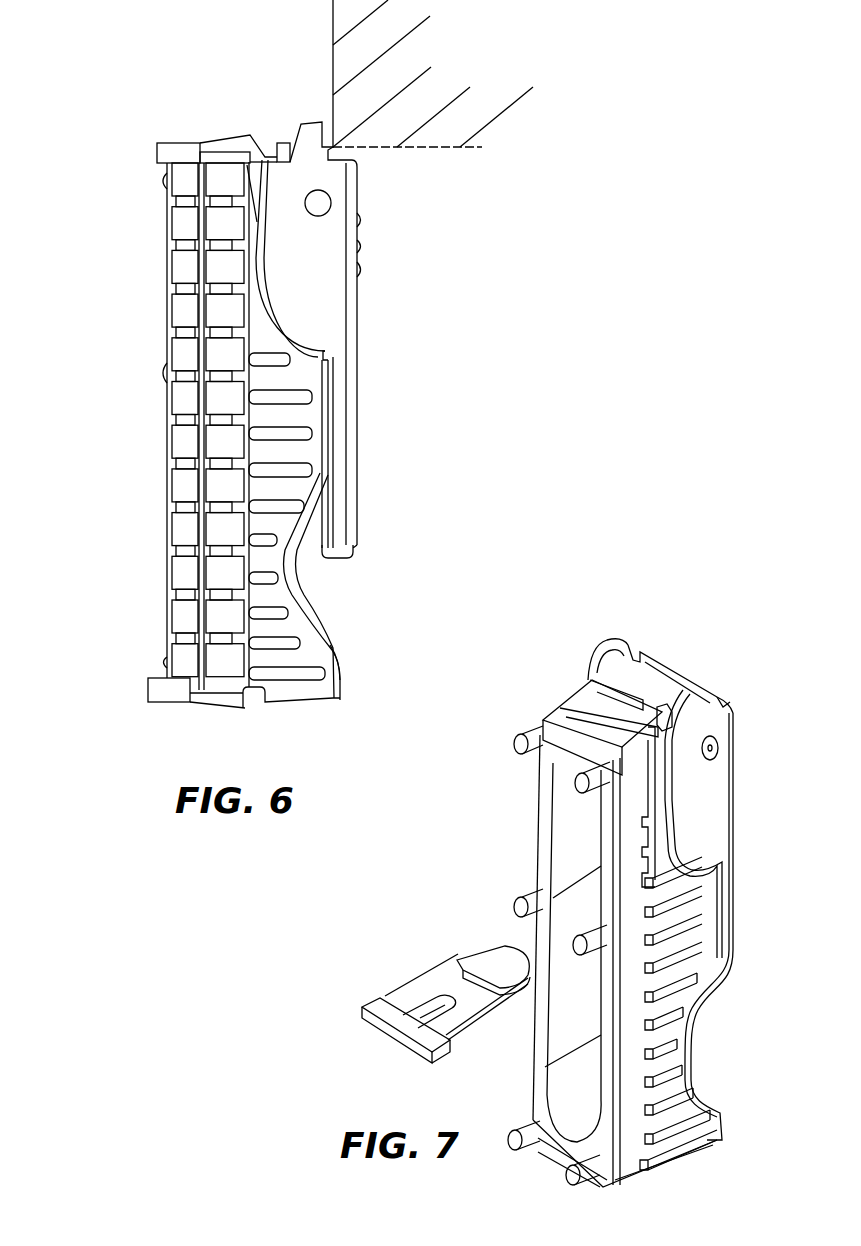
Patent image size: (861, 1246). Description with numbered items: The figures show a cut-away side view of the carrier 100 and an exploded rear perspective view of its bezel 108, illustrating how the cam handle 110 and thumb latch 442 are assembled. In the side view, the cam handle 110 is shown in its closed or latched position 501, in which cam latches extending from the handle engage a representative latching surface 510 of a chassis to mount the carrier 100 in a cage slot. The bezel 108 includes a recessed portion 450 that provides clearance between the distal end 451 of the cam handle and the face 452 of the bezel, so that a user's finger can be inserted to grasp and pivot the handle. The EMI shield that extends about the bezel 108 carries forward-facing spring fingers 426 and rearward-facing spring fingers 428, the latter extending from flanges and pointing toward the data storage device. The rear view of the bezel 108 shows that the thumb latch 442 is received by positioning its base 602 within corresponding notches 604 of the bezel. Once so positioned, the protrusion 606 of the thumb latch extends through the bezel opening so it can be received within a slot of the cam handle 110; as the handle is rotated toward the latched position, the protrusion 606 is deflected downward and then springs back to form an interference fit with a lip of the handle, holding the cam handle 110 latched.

In FIG. 6, the carrier 100 is at (133, 86).
In FIG. 6, the latching surface 510 is at (328, 64).
In FIG. 6, the latched position 501 is at (423, 249).
In FIG. 6, the cam handle 110 is at (361, 358).
In FIG. 7, the cam handle 110 is at (714, 840).
In FIG. 6, the distal end of the cam handle 451 is at (341, 562).
In FIG. 6, the recessed portion 450 is at (334, 621).
In FIG. 6, the face of the bezel 452 is at (345, 659).
In FIG. 6, the rearward-facing spring fingers 428 is at (173, 666).
In FIG. 6, the forward-facing spring fingers 426 is at (215, 705).
In FIG. 6, the bezel 108 is at (300, 696).
In FIG. 7, the bezel 108 is at (588, 703).
In FIG. 7, the notches 604 is at (607, 963).
In FIG. 7, the protrusion 606 is at (483, 957).
In FIG. 7, the base 602 is at (378, 1005).
In FIG. 7, the thumb latch 442 is at (487, 1001).